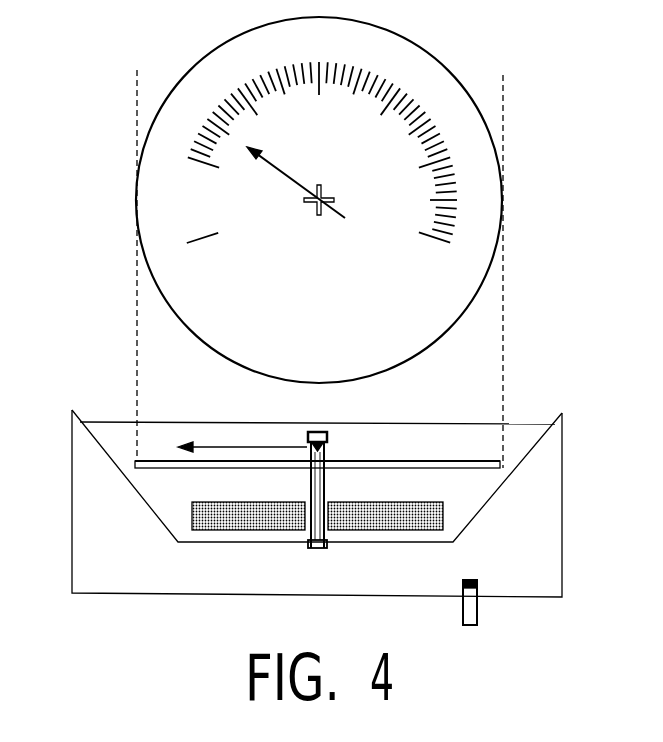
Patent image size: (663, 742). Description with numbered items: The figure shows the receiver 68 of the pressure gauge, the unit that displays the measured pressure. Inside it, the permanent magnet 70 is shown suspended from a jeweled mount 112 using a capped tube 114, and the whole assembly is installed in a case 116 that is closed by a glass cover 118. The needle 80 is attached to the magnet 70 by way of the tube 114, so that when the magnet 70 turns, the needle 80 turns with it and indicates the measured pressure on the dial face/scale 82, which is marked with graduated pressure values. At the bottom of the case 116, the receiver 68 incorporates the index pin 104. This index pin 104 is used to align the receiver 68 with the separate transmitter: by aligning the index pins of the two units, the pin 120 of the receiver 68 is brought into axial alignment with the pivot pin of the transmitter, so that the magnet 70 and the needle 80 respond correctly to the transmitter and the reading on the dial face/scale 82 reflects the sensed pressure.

The receiver 68 is at (562, 150).
The dial face/scale 82 is at (398, 33).
The needle 80 is at (284, 170).
The case 116 is at (562, 442).
The glass cover 118 is at (105, 422).
The capped tube 114 is at (318, 432).
The jeweled mount 112 is at (327, 449).
The pin 120 is at (307, 541).
The permanent magnet 70 is at (192, 512).
The index pin 104 is at (477, 615).